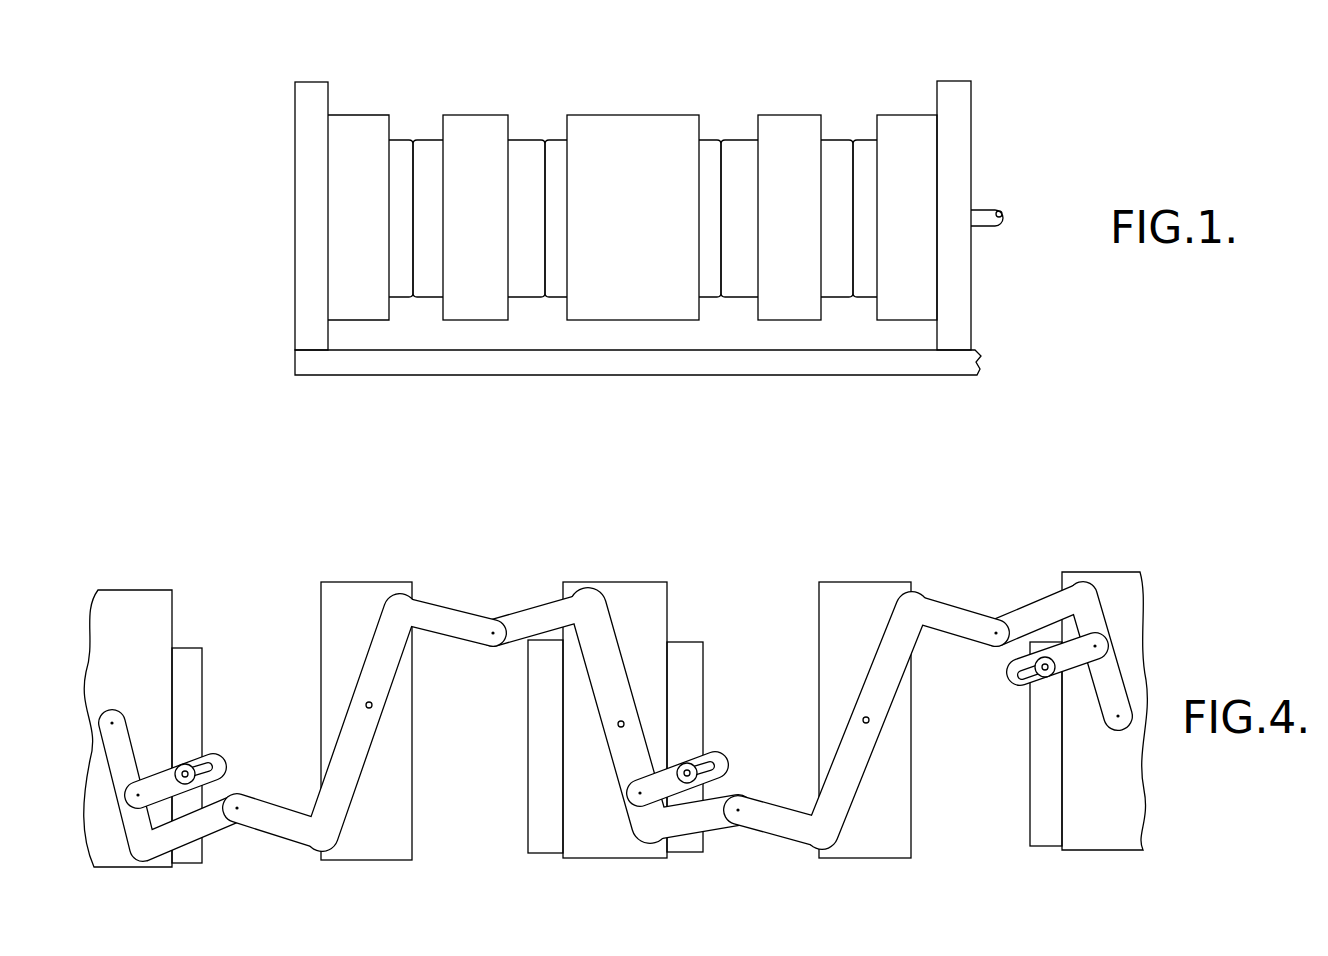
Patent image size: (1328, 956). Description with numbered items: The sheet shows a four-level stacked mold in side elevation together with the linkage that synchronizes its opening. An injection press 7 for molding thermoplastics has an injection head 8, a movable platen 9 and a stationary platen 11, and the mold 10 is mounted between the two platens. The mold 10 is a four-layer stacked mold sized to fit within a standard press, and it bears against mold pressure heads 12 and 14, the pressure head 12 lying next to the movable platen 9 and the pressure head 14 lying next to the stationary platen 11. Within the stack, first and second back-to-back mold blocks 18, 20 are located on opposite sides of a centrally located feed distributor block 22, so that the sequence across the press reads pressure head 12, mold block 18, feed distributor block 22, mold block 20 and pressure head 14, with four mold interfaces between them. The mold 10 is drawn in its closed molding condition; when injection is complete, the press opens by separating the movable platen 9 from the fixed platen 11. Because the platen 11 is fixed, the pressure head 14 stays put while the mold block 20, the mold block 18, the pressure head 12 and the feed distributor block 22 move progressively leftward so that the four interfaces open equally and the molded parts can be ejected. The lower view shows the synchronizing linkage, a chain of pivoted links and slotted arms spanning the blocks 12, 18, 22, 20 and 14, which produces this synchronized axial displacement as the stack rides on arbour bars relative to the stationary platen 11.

In FIG. 1, the injection press 7 is at (743, 383).
In FIG. 1, the injection head 8 is at (983, 212).
In FIG. 1, the movable platen 9 is at (305, 172).
In FIG. 1, the mold 10 is at (624, 82).
In FIG. 4, the mold 10 is at (736, 537).
In FIG. 1, the stationary platen 11 is at (962, 127).
In FIG. 1, the mold pressure head 12 is at (389, 320).
In FIG. 4, the mold pressure head 12 is at (133, 589).
In FIG. 1, the mold pressure head 14 is at (913, 138).
In FIG. 4, the mold pressure head 14 is at (1118, 571).
In FIG. 1, the first mold block 18 is at (472, 115).
In FIG. 4, the first mold block 18 is at (363, 582).
In FIG. 1, the second mold block 20 is at (795, 115).
In FIG. 4, the second mold block 20 is at (872, 582).
In FIG. 1, the feed distributor block 22 is at (667, 115).
In FIG. 4, the feed distributor block 22 is at (623, 582).